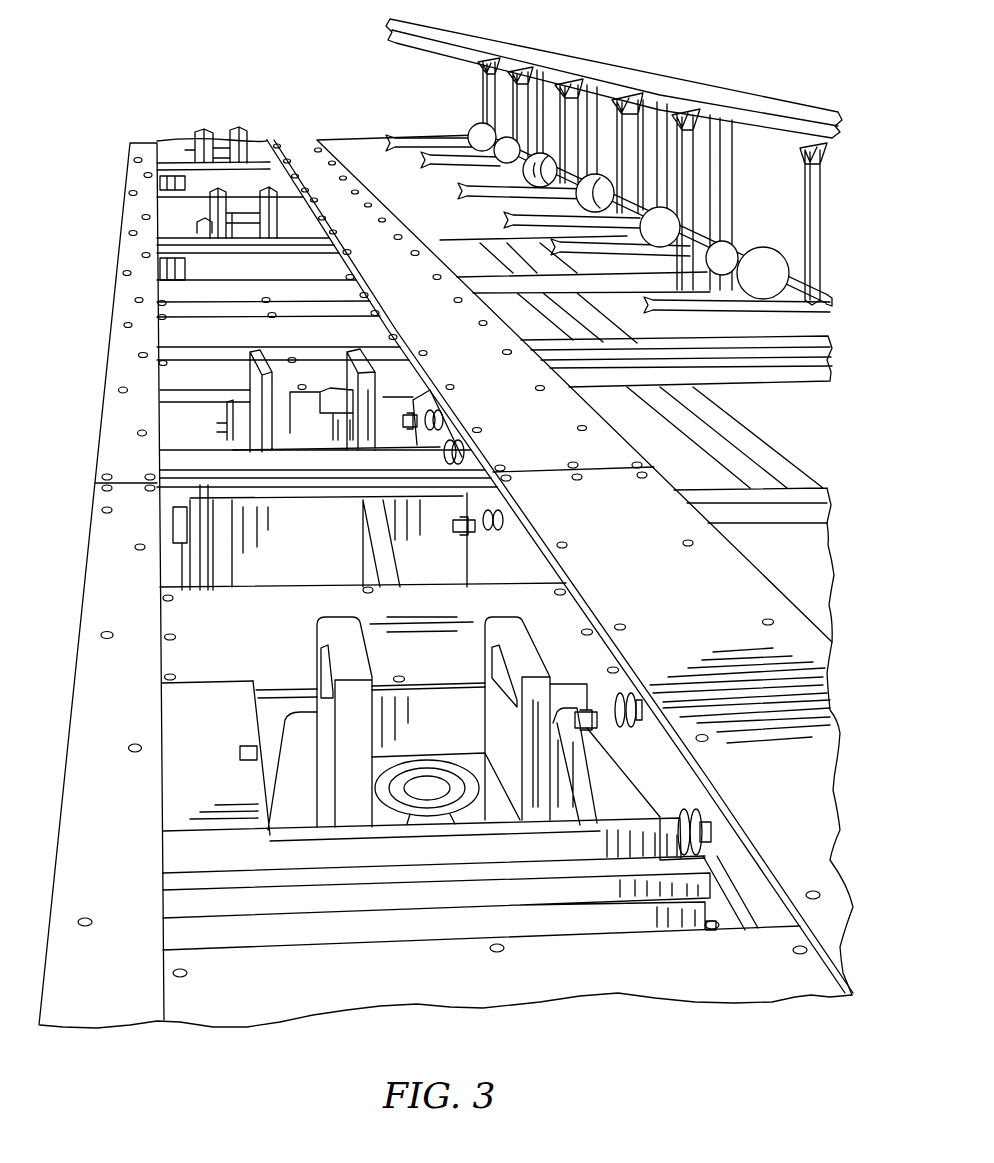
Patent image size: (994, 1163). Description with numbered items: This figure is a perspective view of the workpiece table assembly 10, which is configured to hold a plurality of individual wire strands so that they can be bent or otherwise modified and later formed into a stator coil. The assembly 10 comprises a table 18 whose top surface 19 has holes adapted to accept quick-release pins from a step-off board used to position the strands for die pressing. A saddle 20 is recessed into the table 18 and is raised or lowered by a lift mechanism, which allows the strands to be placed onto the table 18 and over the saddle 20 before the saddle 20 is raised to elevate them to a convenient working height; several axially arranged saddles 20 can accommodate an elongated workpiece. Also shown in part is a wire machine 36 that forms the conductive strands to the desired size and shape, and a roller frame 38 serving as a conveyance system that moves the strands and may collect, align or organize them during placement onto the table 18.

The workpiece table assembly 10 is at (160, 85).
The table 18 is at (122, 302).
The top surface 19 is at (648, 580).
The saddle 20 is at (343, 648).
The wire machine 36 is at (553, 68).
The roller frame 38 is at (587, 283).